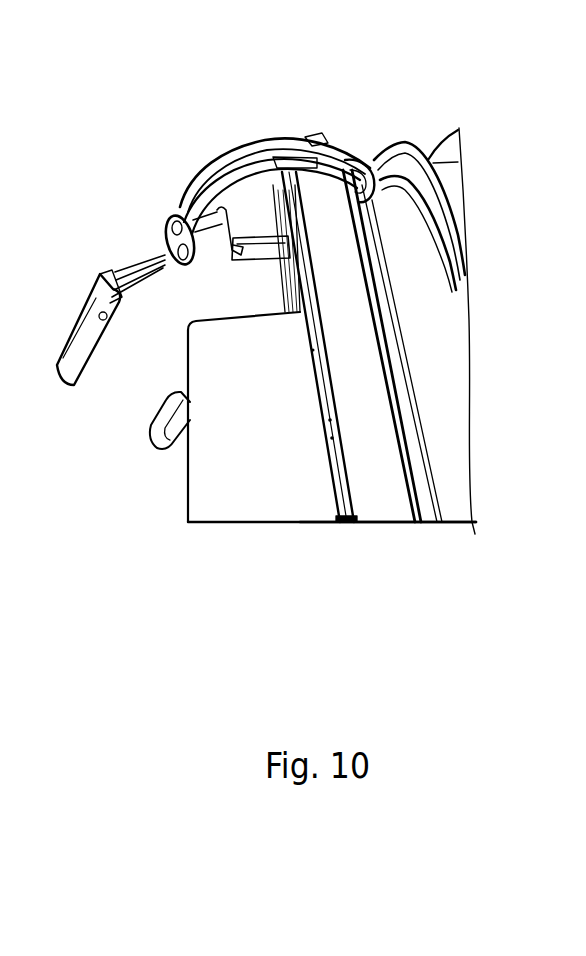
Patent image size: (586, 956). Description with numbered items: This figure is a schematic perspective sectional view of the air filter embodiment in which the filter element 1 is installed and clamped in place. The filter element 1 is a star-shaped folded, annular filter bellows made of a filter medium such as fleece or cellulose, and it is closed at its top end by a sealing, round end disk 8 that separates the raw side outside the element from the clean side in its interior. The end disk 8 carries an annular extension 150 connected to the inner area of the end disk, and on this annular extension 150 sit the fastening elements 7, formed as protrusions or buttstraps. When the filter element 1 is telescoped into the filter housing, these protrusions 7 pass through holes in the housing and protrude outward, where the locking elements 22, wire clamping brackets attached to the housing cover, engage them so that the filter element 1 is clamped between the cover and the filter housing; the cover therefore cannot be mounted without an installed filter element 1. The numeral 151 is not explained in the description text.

The filter element 1 is at (235, 495).
The fastening elements 7 is at (363, 168).
The end disk 8 is at (387, 505).
The locking elements 22 is at (180, 197).
The annular extension 150 is at (363, 435).
The guide groove 151 is at (325, 382).